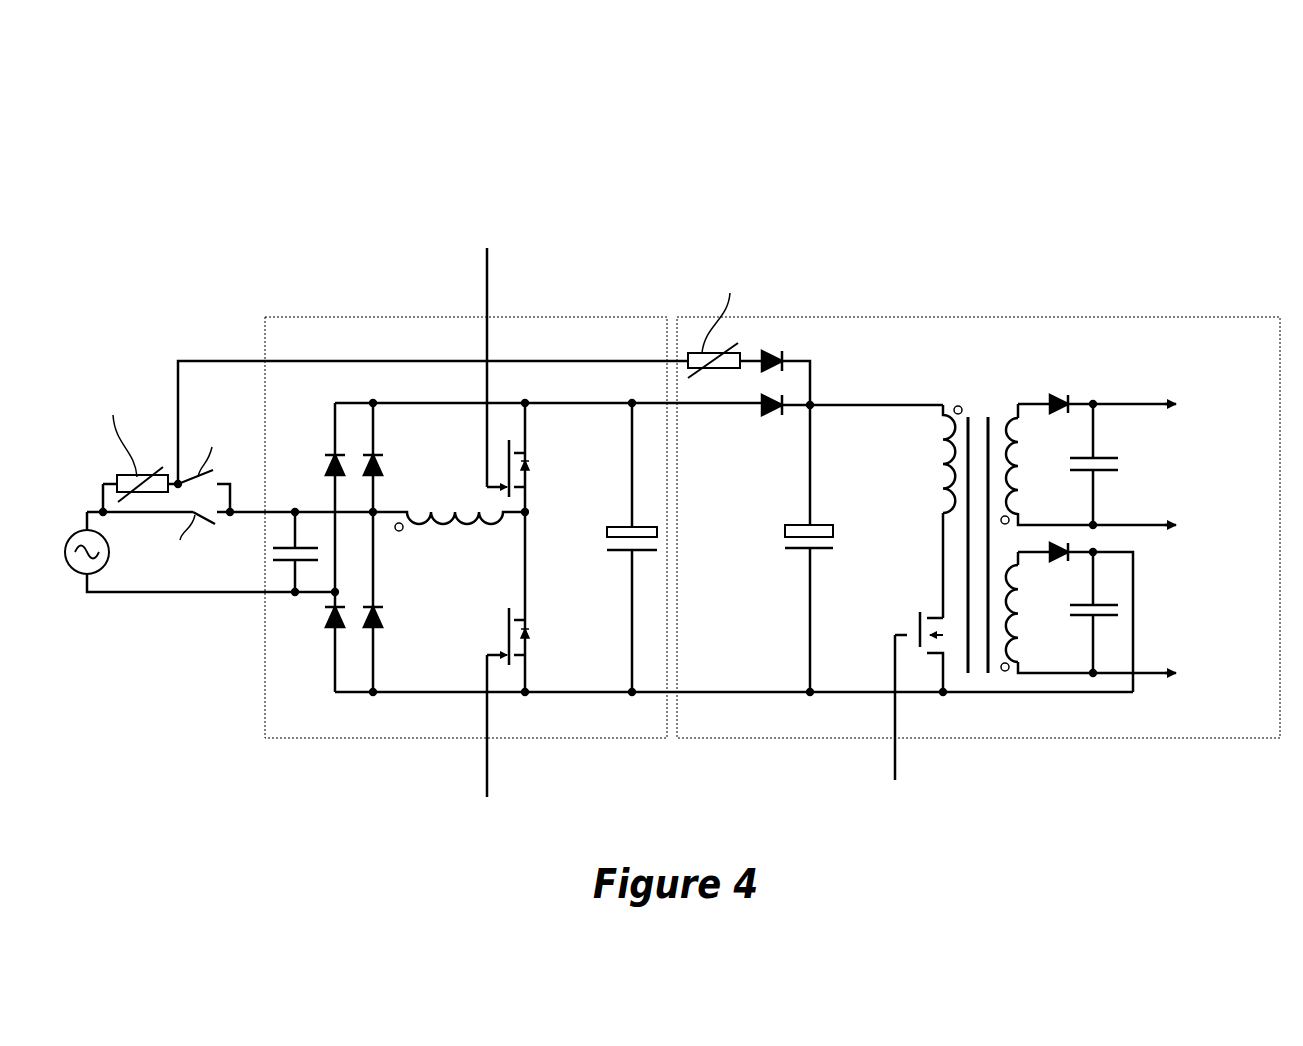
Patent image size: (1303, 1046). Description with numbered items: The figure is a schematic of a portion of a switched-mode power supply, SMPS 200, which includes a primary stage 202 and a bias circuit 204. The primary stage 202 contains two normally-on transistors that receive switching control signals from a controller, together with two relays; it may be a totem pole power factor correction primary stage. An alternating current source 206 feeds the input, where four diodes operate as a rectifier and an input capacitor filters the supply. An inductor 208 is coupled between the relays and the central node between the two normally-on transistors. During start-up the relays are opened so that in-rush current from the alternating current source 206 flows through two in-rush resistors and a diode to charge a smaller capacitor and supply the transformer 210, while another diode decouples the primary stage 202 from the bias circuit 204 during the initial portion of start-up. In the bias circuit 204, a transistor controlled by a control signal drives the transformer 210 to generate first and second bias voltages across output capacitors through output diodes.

The SMPS 200 is at (225, 163).
The primary stage 202 is at (593, 315).
The bias circuit 204 is at (978, 315).
The alternating current source 206 is at (70, 567).
The inductor 208 is at (467, 533).
The transformer 210 is at (988, 705).